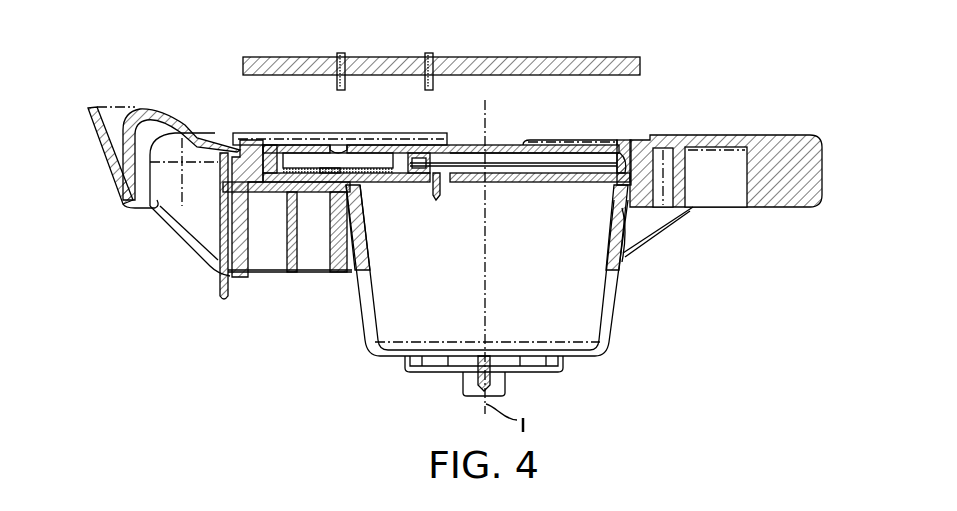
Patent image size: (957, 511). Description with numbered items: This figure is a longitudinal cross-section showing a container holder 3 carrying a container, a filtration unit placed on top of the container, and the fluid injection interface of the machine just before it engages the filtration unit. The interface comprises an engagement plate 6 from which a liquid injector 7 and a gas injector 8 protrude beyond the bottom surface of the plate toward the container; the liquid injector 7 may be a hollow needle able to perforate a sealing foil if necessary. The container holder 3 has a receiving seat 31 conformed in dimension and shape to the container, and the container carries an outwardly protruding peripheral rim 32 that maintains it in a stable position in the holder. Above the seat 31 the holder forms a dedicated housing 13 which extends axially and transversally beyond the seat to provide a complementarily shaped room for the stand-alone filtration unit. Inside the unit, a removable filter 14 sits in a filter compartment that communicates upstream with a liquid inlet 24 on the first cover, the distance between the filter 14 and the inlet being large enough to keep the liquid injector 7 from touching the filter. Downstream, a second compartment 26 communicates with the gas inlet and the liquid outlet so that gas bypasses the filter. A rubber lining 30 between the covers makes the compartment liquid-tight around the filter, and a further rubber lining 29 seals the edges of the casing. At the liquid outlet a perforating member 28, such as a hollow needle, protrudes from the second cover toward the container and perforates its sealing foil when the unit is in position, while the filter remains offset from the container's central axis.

The container holder 3 is at (832, 138).
The engagement plate 6 is at (640, 64).
The liquid injector 7 is at (345, 78).
The gas injector 8 is at (433, 78).
The dedicated housing 13 is at (285, 193).
The filter 14 is at (341, 180).
The liquid inlet 24 is at (337, 148).
The second compartment 26 is at (428, 168).
The perforating member 28 is at (437, 190).
The rubber lining 29 is at (623, 157).
The rubber lining 30 is at (343, 192).
The receiving seat 31 is at (620, 267).
The peripheral protruding rim 32 is at (632, 215).